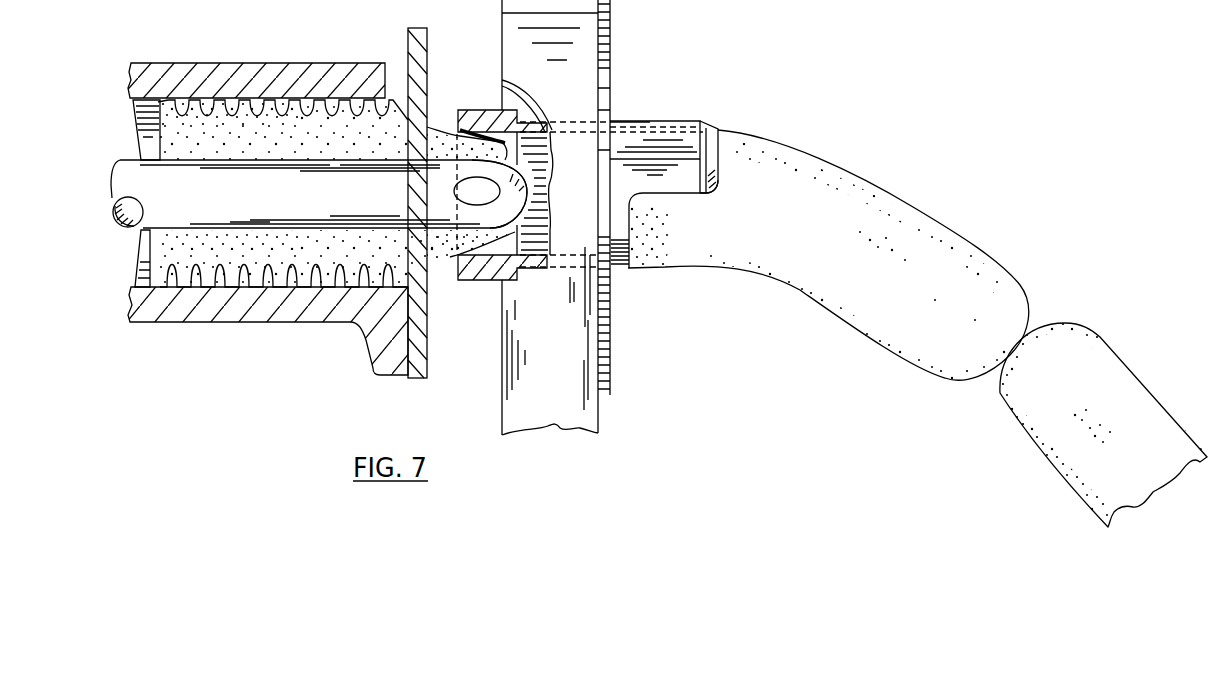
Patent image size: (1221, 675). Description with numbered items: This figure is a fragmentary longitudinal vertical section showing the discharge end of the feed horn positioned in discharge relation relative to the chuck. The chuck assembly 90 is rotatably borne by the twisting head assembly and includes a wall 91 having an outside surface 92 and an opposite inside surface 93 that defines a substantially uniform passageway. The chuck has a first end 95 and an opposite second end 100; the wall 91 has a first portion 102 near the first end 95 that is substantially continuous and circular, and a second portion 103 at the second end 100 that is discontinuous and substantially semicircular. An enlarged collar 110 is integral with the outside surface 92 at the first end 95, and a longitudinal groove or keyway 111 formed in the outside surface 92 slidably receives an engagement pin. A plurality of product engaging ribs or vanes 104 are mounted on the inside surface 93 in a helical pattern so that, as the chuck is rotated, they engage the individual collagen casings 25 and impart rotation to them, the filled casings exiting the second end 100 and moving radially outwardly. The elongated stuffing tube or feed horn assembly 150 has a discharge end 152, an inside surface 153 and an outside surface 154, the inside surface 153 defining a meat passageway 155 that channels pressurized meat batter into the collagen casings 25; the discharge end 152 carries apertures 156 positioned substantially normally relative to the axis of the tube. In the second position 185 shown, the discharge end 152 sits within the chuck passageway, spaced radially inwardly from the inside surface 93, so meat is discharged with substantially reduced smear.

The collagen casing 25 is at (178, 118).
The chuck assembly 90 is at (648, 113).
The wall 91 is at (665, 121).
The outside surface 92 is at (660, 162).
The inside surface 93 is at (539, 250).
The first end 95 is at (503, 86).
The second end 100 is at (698, 121).
The first portion 102 is at (528, 273).
The second portion 103 is at (697, 199).
The product engaging ribs or vanes 104 is at (533, 213).
The enlarged collar 110 is at (459, 108).
The groove or keyway 111 is at (623, 122).
The stuffing tube or feed horn assembly 150 is at (187, 235).
The discharge end 152 is at (463, 207).
The inside surface 153 is at (137, 212).
The outside surface 154 is at (300, 229).
The meat passageway 155 is at (118, 190).
The aperture 156 is at (473, 190).
The second position 185 is at (412, 168).